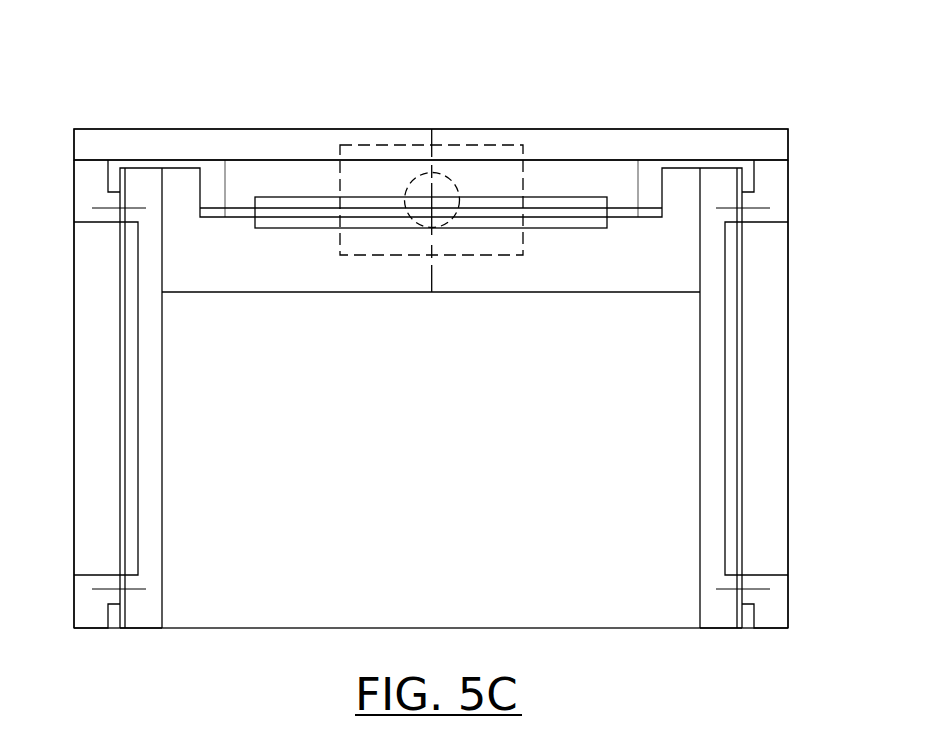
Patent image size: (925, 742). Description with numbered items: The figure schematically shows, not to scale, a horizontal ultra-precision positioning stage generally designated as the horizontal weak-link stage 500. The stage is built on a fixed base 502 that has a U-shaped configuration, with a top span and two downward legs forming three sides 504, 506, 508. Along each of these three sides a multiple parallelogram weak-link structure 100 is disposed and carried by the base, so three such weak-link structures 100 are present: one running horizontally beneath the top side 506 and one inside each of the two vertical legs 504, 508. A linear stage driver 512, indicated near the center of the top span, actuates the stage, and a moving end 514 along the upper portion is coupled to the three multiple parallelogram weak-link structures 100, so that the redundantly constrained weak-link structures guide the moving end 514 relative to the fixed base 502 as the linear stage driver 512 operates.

The horizontal weak-link stage 500 is at (470, 38).
The fixed base 502 is at (568, 315).
The side 504 is at (788, 277).
The side 506 is at (538, 129).
The side 508 is at (73, 358).
The linear stage driver 512 is at (390, 180).
The moving end 514 is at (277, 140).
The multiple parallelogram weak-link structure 100 is at (233, 215).